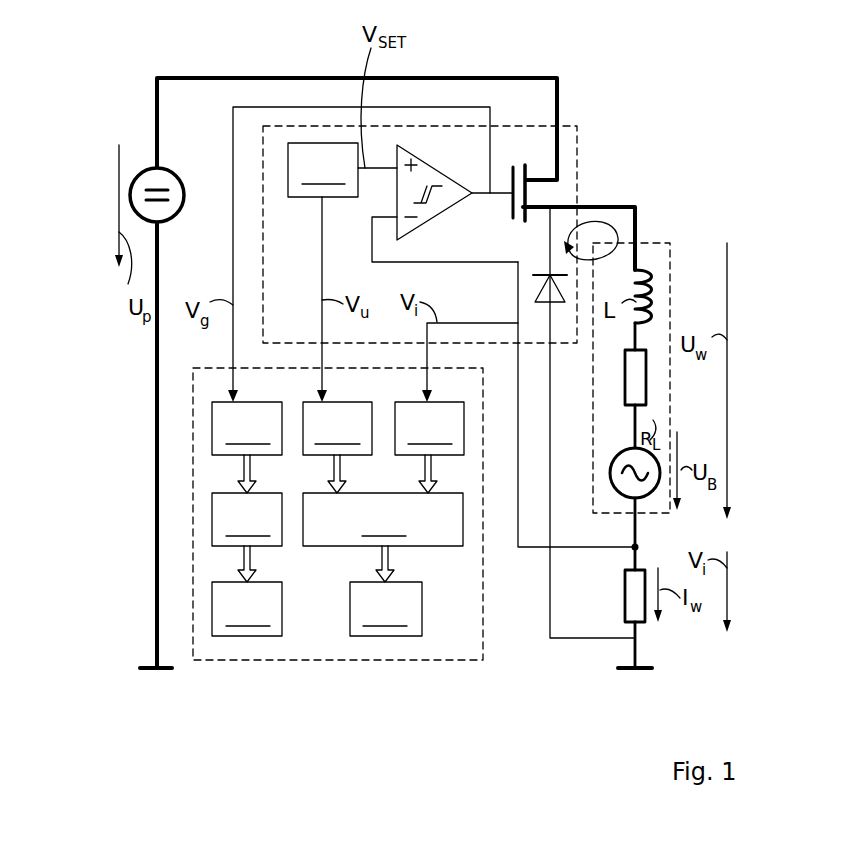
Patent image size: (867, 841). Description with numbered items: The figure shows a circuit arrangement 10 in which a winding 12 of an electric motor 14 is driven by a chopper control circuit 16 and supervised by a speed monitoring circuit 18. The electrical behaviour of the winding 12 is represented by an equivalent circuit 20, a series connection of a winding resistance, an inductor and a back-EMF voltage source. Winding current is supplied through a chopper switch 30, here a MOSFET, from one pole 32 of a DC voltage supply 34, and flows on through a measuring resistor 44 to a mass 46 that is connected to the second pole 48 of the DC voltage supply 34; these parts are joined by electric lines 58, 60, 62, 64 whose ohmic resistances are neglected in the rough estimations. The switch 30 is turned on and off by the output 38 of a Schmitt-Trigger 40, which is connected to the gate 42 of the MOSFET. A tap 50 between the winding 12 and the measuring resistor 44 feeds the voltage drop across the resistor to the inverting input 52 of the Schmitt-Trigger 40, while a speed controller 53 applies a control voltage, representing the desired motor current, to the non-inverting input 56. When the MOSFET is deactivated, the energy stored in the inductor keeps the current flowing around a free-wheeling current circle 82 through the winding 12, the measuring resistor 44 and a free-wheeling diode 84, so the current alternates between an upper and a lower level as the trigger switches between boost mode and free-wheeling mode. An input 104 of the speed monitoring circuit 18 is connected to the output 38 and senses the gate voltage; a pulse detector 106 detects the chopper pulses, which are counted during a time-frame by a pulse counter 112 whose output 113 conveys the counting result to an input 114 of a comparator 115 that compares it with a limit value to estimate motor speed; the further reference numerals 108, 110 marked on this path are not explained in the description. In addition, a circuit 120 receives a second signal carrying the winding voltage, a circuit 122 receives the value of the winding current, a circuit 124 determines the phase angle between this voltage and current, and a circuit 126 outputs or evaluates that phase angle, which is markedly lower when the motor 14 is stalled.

The circuit arrangement 10 is at (583, 110).
The winding 12 is at (592, 366).
The electric motor 14 is at (592, 421).
The chopper control circuit 16 is at (578, 133).
The speed monitoring circuit 18 is at (485, 606).
The equivalent circuit 20 is at (592, 473).
The chopper switch 30 is at (587, 185).
The pole 32 is at (168, 172).
The DC voltage supply 34 is at (181, 200).
The output 38 is at (470, 192).
The Schmitt-Trigger 40 is at (412, 214).
The gate 42 is at (502, 200).
The measuring resistor 44 is at (624, 598).
The mass 46 is at (160, 666).
The second pole 48 is at (160, 222).
The tap 50 is at (640, 547).
The inverting input 52 is at (392, 214).
The speed controller 53 is at (323, 272).
The non-inverting input 56 is at (394, 167).
The electric line 58 is at (620, 205).
The electric line 60 is at (631, 533).
The electric line 62 is at (630, 561).
The electric line 64 is at (630, 657).
The free-wheeling current circle 82 is at (625, 232).
The free-wheeling diode 84 is at (533, 284).
The input 104 is at (236, 394).
The pulse detector 106 is at (247, 428).
The output of detection unit 108 is at (238, 462).
The input of computing unit 110 is at (252, 492).
The pulse counter 112 is at (247, 519).
The output 113 is at (240, 552).
The input 114 is at (252, 580).
The comparator 115 is at (247, 609).
The circuit for receiving a second signal 120 is at (337, 428).
The circuit for receiving a current value 122 is at (429, 428).
The circuit for determining a phase angle 124 is at (383, 519).
The circuit for outputting or evaluating the phase angle 126 is at (386, 609).